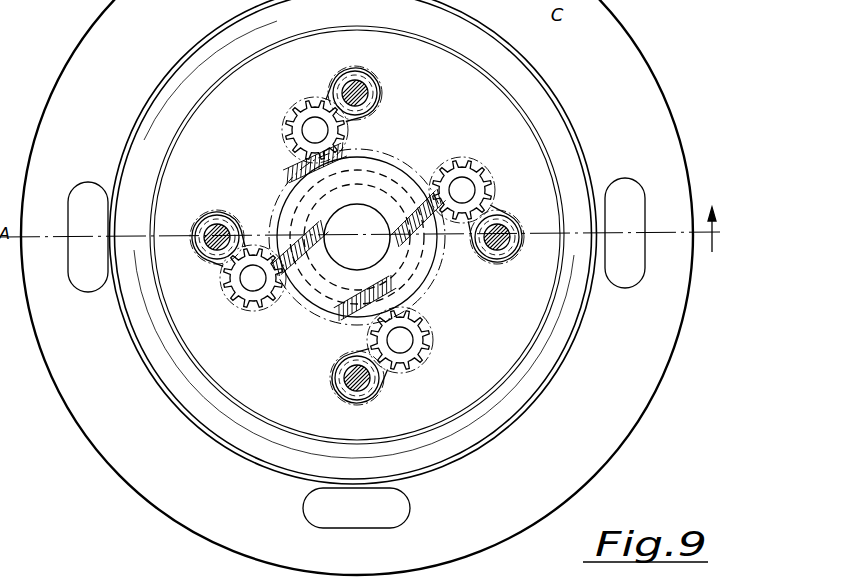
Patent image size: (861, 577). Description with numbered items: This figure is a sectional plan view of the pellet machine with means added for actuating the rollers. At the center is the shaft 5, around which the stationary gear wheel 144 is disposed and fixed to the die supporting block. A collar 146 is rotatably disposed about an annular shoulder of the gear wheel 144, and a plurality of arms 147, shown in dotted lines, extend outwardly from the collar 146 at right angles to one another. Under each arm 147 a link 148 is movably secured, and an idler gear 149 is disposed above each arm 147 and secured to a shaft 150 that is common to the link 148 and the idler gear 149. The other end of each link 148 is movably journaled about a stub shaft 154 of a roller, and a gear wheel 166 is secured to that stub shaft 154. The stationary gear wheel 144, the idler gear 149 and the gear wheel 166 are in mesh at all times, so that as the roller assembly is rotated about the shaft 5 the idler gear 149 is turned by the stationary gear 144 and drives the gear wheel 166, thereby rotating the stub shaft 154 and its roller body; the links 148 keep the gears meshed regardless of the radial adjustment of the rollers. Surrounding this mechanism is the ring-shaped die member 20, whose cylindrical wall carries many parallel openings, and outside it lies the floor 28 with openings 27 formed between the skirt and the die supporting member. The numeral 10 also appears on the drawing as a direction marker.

The shaft 5 is at (370, 208).
The direction arrow 10 is at (720, 237).
The ring-shaped die member 20 is at (543, 84).
The openings 27 is at (85, 186).
The floor 28 is at (612, 127).
The stationary gear wheel 144 is at (297, 171).
The collar 146 is at (438, 265).
The arms 147 is at (352, 158).
The link 148 is at (327, 80).
The idler gear 149 is at (306, 113).
The shaft 150 is at (303, 130).
The stub shaft 154 is at (372, 92).
The gear wheel 166 is at (356, 70).